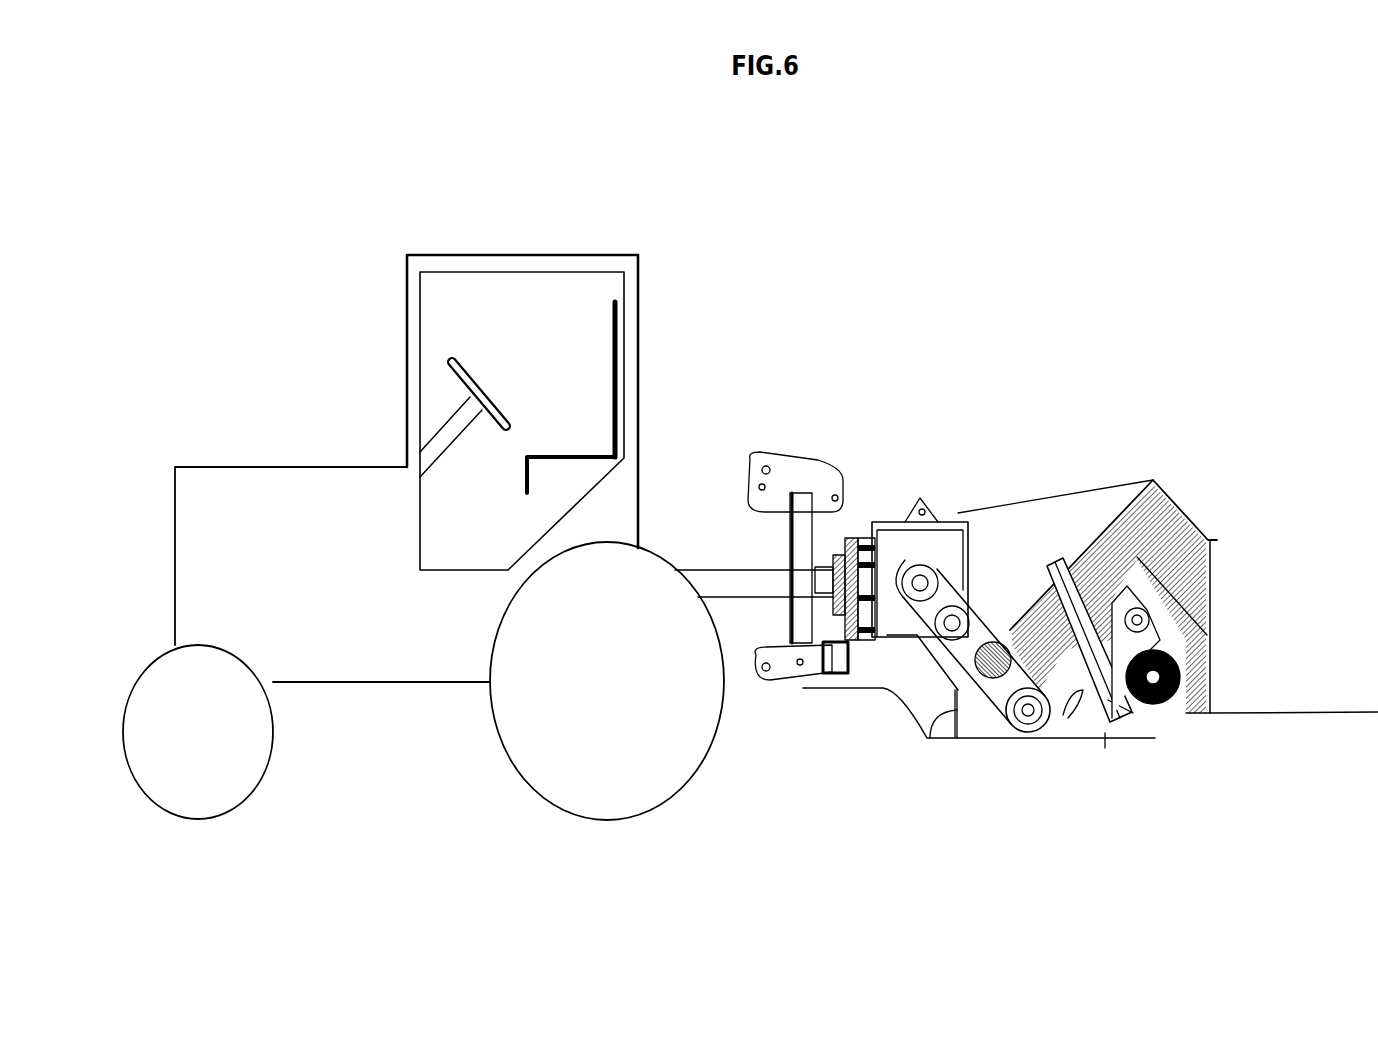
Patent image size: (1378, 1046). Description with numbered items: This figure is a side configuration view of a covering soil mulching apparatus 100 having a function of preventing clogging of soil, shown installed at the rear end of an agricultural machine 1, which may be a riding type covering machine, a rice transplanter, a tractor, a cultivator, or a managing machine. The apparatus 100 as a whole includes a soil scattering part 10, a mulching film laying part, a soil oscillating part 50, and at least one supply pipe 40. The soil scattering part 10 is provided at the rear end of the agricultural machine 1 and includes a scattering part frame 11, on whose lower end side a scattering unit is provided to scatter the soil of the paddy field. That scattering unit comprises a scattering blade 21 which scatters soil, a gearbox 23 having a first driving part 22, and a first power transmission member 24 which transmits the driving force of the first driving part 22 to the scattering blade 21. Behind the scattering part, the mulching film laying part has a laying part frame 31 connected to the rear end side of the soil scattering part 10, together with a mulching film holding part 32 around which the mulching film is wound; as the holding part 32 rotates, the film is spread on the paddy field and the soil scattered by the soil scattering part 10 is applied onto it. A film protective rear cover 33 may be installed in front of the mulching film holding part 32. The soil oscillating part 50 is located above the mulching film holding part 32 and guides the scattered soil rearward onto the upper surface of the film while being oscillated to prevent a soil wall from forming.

The agricultural machine 1 is at (372, 212).
The covering soil mulching apparatus 100 is at (1197, 392).
The soil scattering part 10 is at (873, 750).
The scattering part frame 11 is at (927, 738).
The scattering blade 21 is at (1013, 763).
The first driving part 22 is at (938, 523).
The gearbox 23 is at (878, 522).
The first power transmission member 24 is at (997, 567).
The laying part frame 31 is at (1217, 545).
The mulching film holding part 32 is at (1155, 735).
The film protective rear cover 33 is at (1105, 737).
The supply pipe 40 is at (1070, 563).
The soil oscillating part 50 is at (1200, 633).